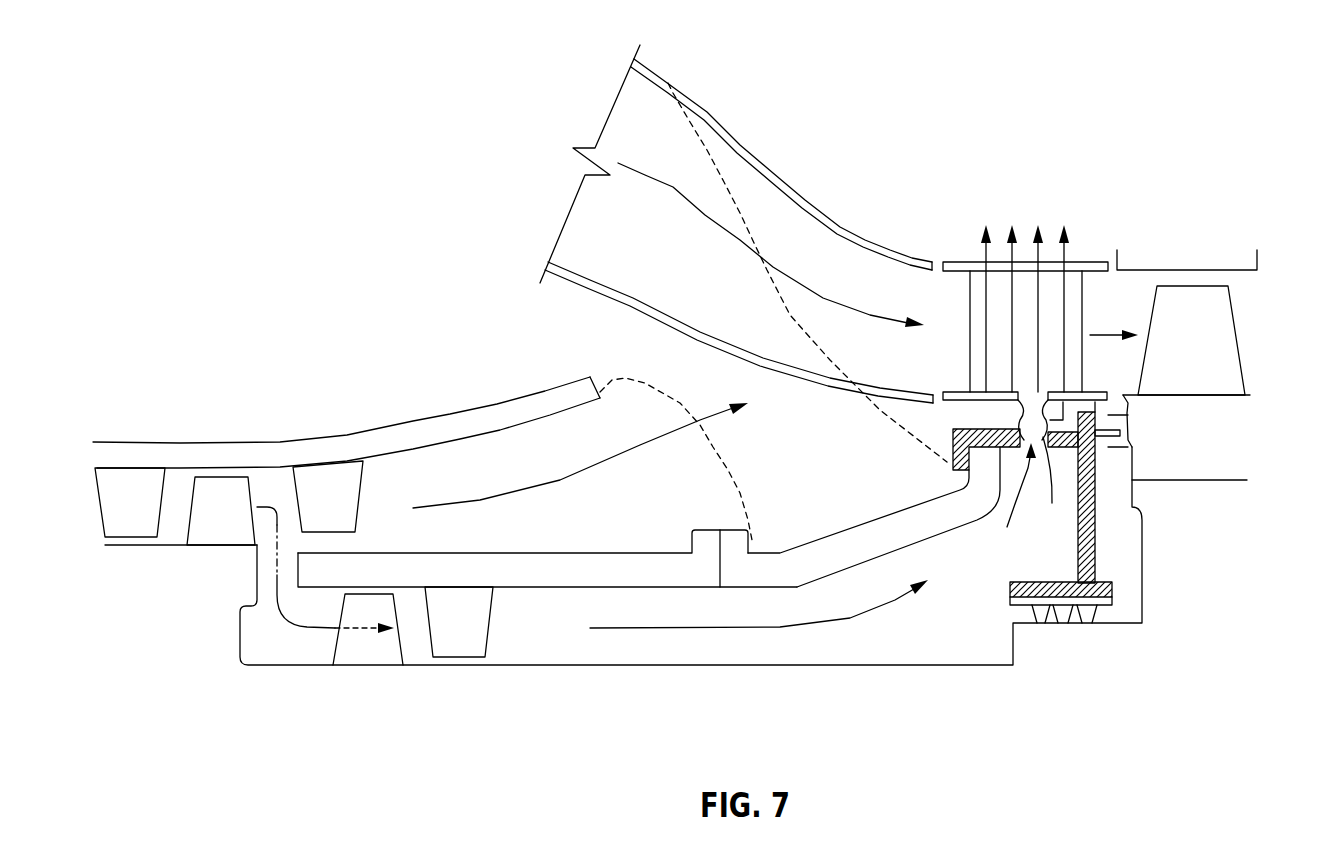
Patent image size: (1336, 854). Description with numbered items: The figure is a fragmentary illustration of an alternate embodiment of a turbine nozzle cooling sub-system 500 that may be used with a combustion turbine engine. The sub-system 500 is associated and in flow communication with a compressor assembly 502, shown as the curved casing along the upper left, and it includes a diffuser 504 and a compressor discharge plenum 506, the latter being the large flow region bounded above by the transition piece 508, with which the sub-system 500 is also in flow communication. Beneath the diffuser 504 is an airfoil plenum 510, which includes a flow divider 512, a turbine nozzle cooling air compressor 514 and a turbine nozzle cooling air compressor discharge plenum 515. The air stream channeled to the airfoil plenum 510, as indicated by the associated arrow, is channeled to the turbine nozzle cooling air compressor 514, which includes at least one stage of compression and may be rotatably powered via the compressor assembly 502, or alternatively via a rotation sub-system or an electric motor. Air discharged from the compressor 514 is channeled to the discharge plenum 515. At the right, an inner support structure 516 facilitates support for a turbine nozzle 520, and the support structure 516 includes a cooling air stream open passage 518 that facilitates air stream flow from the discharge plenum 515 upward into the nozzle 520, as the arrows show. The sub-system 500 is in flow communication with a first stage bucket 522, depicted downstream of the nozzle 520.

The turbine nozzle cooling sub-system 500 is at (197, 116).
The compressor assembly 502 is at (97, 453).
The diffuser 504 is at (658, 524).
The compressor discharge plenum 506 is at (828, 121).
The transition piece 508 is at (810, 197).
The airfoil plenum 510 is at (290, 666).
The flow divider 512 is at (488, 560).
The turbine nozzle cooling air compressor 514 is at (420, 666).
The turbine nozzle cooling air compressor discharge plenum 515 is at (560, 645).
The inner support structure 516 is at (1100, 481).
The cooling air stream open passage 518 is at (1012, 468).
The turbine nozzle 520 is at (1077, 298).
The first stage bucket 522 is at (1218, 331).